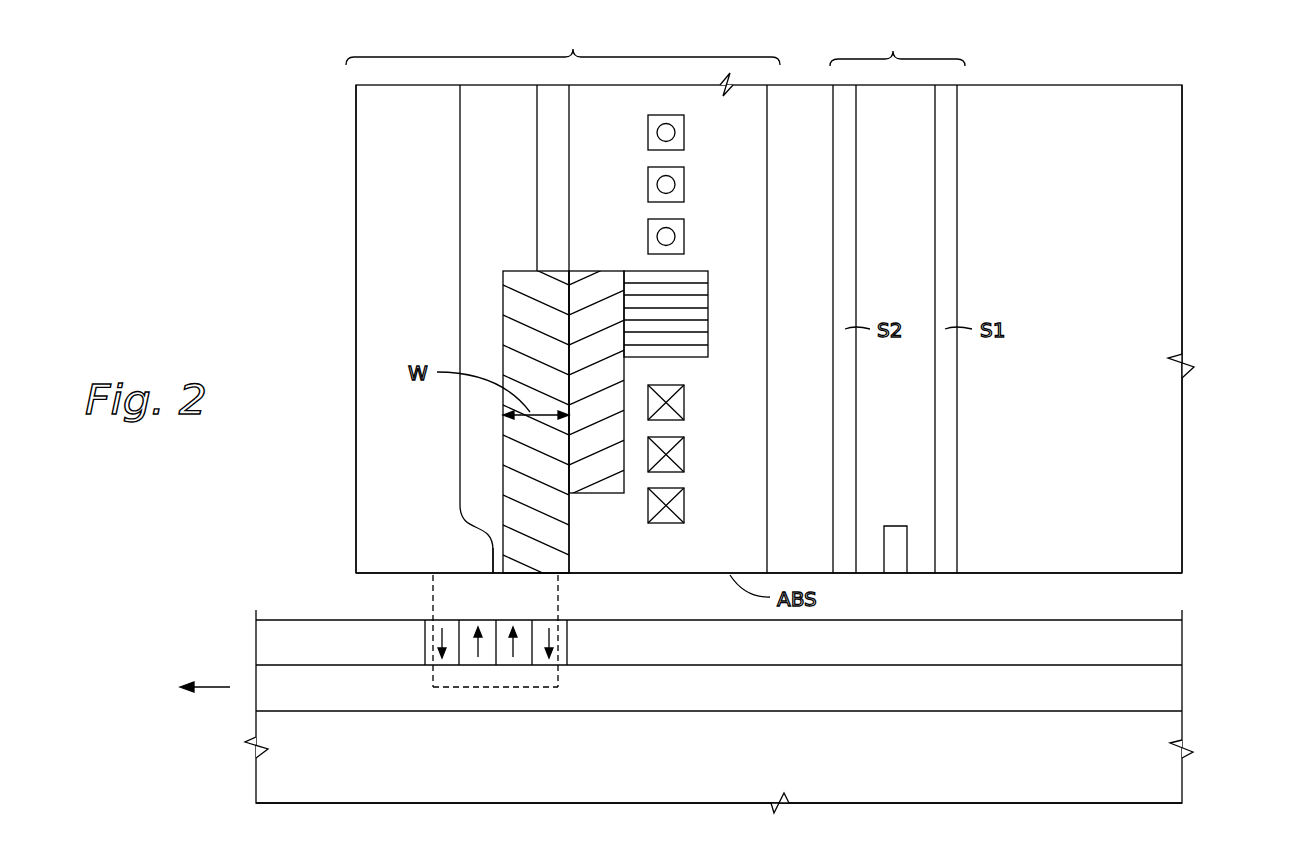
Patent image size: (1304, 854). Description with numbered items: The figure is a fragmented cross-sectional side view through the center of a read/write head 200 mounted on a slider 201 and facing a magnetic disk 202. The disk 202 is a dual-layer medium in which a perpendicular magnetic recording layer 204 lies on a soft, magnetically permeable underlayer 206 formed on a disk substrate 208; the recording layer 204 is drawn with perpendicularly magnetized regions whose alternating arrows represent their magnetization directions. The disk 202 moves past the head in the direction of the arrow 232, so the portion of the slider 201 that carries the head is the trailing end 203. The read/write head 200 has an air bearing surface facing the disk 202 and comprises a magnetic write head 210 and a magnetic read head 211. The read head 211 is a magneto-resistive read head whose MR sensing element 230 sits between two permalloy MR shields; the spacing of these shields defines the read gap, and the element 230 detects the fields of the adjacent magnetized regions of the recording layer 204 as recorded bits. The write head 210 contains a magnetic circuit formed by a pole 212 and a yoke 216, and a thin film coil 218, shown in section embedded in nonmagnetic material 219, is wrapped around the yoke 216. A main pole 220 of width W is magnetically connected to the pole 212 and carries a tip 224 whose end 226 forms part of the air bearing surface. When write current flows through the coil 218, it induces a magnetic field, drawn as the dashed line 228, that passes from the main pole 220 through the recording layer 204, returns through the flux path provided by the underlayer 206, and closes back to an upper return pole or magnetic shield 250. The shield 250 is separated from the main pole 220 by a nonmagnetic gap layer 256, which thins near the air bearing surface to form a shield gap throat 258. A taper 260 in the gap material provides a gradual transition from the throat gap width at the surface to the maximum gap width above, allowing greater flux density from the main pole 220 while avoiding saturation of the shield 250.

The read/write head 200 is at (212, 72).
The slider 201 is at (1170, 190).
The magnetic disk 202 is at (1210, 739).
The trailing end 203 is at (321, 298).
The recording layer 204 is at (1170, 648).
The underlayer 206 is at (1170, 691).
The disk substrate 208 is at (1170, 775).
The magnetic write head 210 is at (563, 297).
The magnetic read head 211 is at (897, 297).
The pole 212 is at (587, 279).
The yoke 216 is at (703, 269).
The thin film coil 218 is at (693, 105).
The nonmagnetic material 219 is at (623, 170).
The main pole 220 is at (518, 279).
The tip 224 is at (569, 538).
The end 226 is at (567, 575).
The magnetic field 228 is at (433, 597).
The MR sensing element 230 is at (892, 527).
The arrow 232 is at (215, 686).
The upper return pole 250 is at (362, 182).
The nonmagnetic gap layer 256 is at (467, 312).
The shield gap throat 258 is at (493, 556).
The taper 260 is at (459, 519).